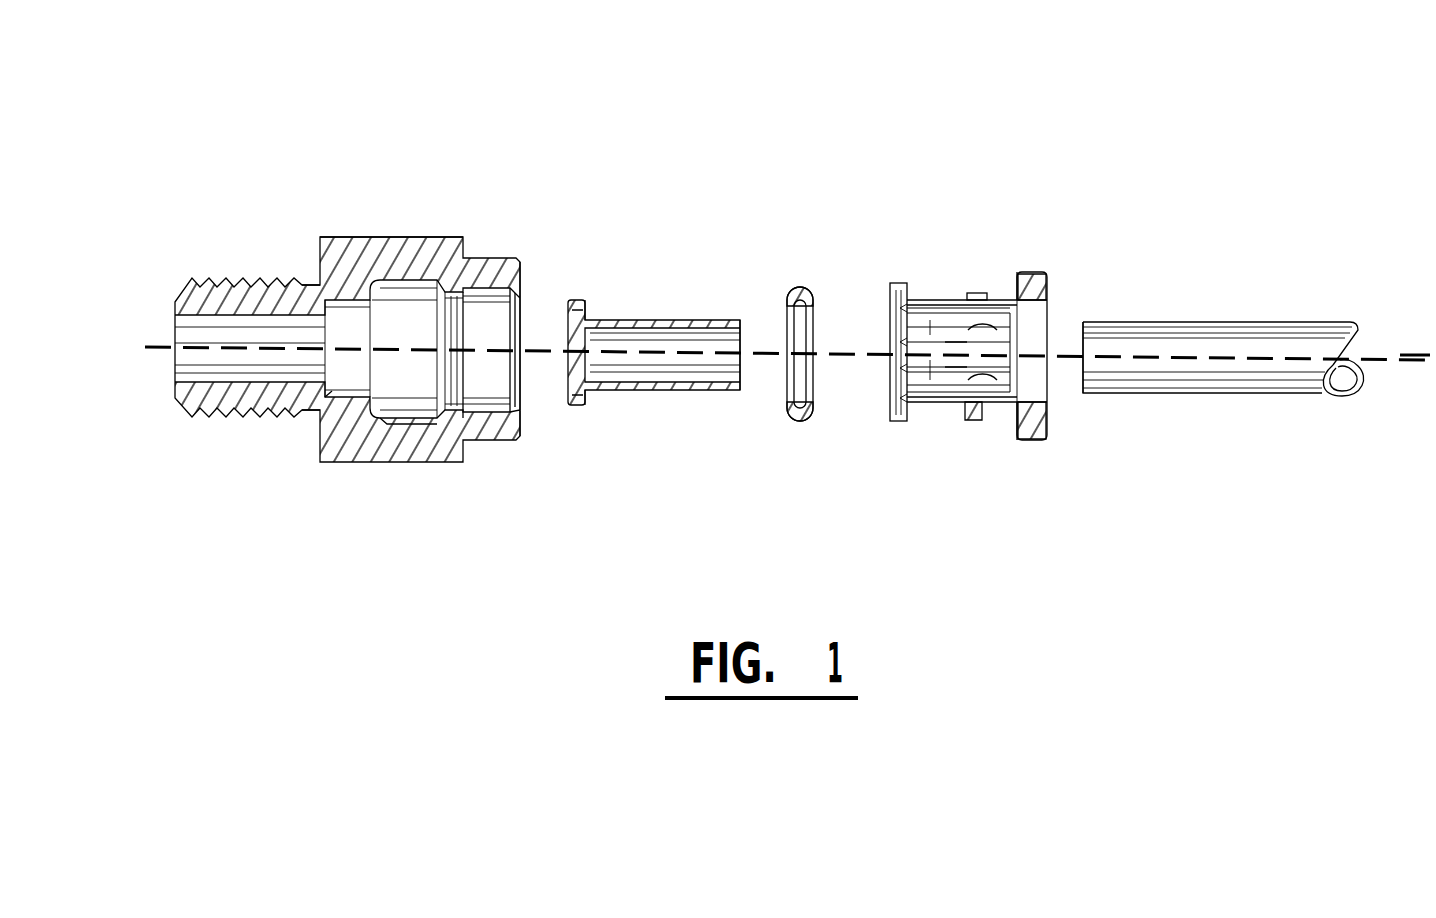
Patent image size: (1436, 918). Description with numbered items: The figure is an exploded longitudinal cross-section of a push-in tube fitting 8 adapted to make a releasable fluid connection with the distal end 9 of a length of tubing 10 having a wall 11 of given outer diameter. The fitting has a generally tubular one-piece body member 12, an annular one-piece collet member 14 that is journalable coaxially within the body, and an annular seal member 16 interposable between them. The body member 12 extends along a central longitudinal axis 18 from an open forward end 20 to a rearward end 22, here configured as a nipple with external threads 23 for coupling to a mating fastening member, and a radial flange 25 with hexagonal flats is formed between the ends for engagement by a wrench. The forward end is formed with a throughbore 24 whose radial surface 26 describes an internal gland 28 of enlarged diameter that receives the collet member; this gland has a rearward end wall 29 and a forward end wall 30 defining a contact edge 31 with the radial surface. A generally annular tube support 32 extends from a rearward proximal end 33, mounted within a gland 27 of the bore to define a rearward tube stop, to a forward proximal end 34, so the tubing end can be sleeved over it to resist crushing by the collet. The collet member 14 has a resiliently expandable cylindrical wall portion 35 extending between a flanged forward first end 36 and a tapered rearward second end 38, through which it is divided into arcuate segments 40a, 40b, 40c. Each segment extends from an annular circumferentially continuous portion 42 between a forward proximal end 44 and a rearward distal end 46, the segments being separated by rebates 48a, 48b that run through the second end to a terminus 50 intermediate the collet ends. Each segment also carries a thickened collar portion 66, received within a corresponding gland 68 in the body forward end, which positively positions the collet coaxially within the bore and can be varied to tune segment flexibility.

The push-in tube fitting 8 is at (1182, 131).
The distal end of tubing 9 is at (1082, 346).
The tubing 10 is at (1182, 321).
The tubing wall 11 is at (1345, 397).
The body member 12 is at (320, 258).
The collet member 14 is at (1034, 271).
The seal member 16 is at (793, 287).
The central longitudinal axis 18 is at (1394, 350).
The open forward end 20 is at (521, 262).
The rearward end 22 is at (178, 300).
The external threads 23 is at (270, 280).
The throughbore 24 is at (499, 324).
The radial flange 25 is at (405, 237).
The radial surface 26 is at (520, 412).
The gland 27 is at (357, 386).
The internal gland 28 is at (411, 351).
The rearward end wall 29 is at (387, 405).
The forward end wall 30 is at (422, 413).
The contact edge 31 is at (492, 412).
The tube support 32 is at (678, 318).
The rearward proximal end 33 is at (603, 310).
The forward proximal end 34 is at (741, 321).
The cylindrical wall portion 35 is at (1001, 300).
The flanged forward first end 36 is at (1048, 272).
The tapered rearward second end 38 is at (891, 300).
The arcuate segment 40a is at (900, 402).
The arcuate segment 40b is at (907, 385).
The arcuate segment 40c is at (912, 372).
The annular circumferentially continuous portion 42 is at (997, 373).
The forward proximal end of segment 44 is at (932, 398).
The rearward distal end of segment 46 is at (986, 404).
The rebate 48a is at (980, 331).
The rebate 48b is at (950, 379).
The terminus of rebate 50 is at (1023, 421).
The collar portion 66 is at (973, 293).
The gland 68 is at (499, 386).